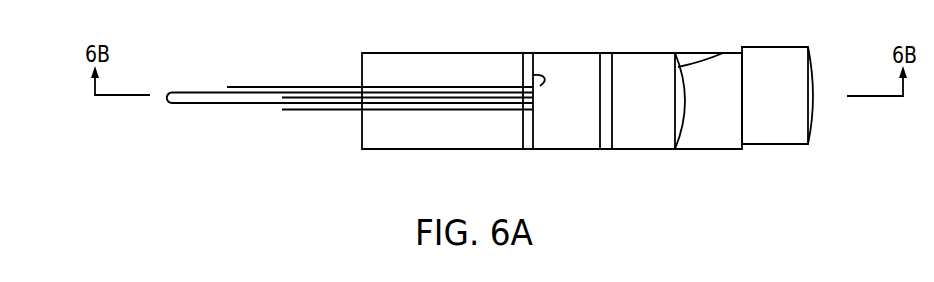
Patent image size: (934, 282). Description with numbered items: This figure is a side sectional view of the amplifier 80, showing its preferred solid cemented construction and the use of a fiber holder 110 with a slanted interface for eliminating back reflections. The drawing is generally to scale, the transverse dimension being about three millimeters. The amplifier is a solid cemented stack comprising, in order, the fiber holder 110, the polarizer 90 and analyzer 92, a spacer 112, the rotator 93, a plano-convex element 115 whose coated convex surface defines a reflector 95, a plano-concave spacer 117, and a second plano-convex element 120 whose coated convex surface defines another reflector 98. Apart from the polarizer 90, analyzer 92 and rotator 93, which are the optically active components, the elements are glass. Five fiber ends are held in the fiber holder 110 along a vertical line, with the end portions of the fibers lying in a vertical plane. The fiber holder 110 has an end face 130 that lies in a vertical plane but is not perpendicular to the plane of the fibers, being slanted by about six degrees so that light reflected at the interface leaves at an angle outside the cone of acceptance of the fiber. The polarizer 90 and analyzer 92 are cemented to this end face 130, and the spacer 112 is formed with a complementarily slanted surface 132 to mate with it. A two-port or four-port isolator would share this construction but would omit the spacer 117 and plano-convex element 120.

The amplifier 80 is at (343, 178).
The polarizer 90 is at (528, 53).
The analyzer 92 is at (525, 150).
The rotator 93 is at (600, 150).
The reflector 95 is at (742, 32).
The reflector 98 is at (813, 67).
The fiber holder 110 is at (452, 150).
The spacer 112 is at (587, 53).
The plano-convex element 115 is at (658, 150).
The plano-concave spacer 117 is at (730, 150).
The plano-convex element 120 is at (788, 145).
The end face 130 is at (522, 67).
The slanted surface 132 is at (590, 112).